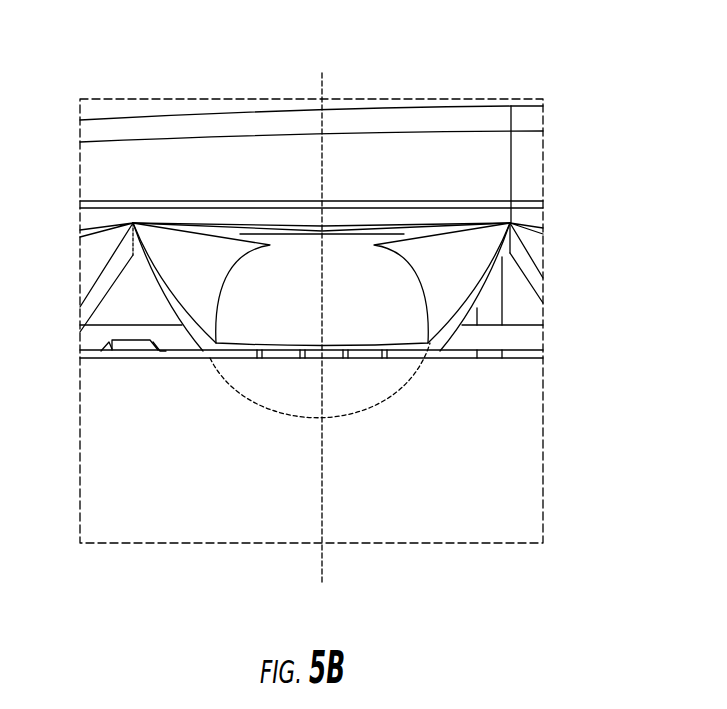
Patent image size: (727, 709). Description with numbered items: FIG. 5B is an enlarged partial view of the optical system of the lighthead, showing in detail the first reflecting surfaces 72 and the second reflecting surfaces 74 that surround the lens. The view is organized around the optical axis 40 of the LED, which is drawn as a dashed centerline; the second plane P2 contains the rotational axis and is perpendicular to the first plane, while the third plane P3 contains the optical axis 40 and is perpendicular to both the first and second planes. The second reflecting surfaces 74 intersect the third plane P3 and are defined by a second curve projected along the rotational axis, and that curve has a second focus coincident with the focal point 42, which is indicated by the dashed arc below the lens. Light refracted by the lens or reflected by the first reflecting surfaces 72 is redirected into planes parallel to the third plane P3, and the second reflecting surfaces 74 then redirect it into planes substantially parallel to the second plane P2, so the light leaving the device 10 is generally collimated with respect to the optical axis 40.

The light emitting device 10 is at (473, 229).
The optical axis 40 is at (325, 96).
The focal point 42 is at (321, 358).
The first reflecting surfaces 72 is at (363, 257).
The second reflecting surfaces 74 is at (478, 292).
The second plane P2 is at (323, 552).
The third plane P3 is at (543, 131).